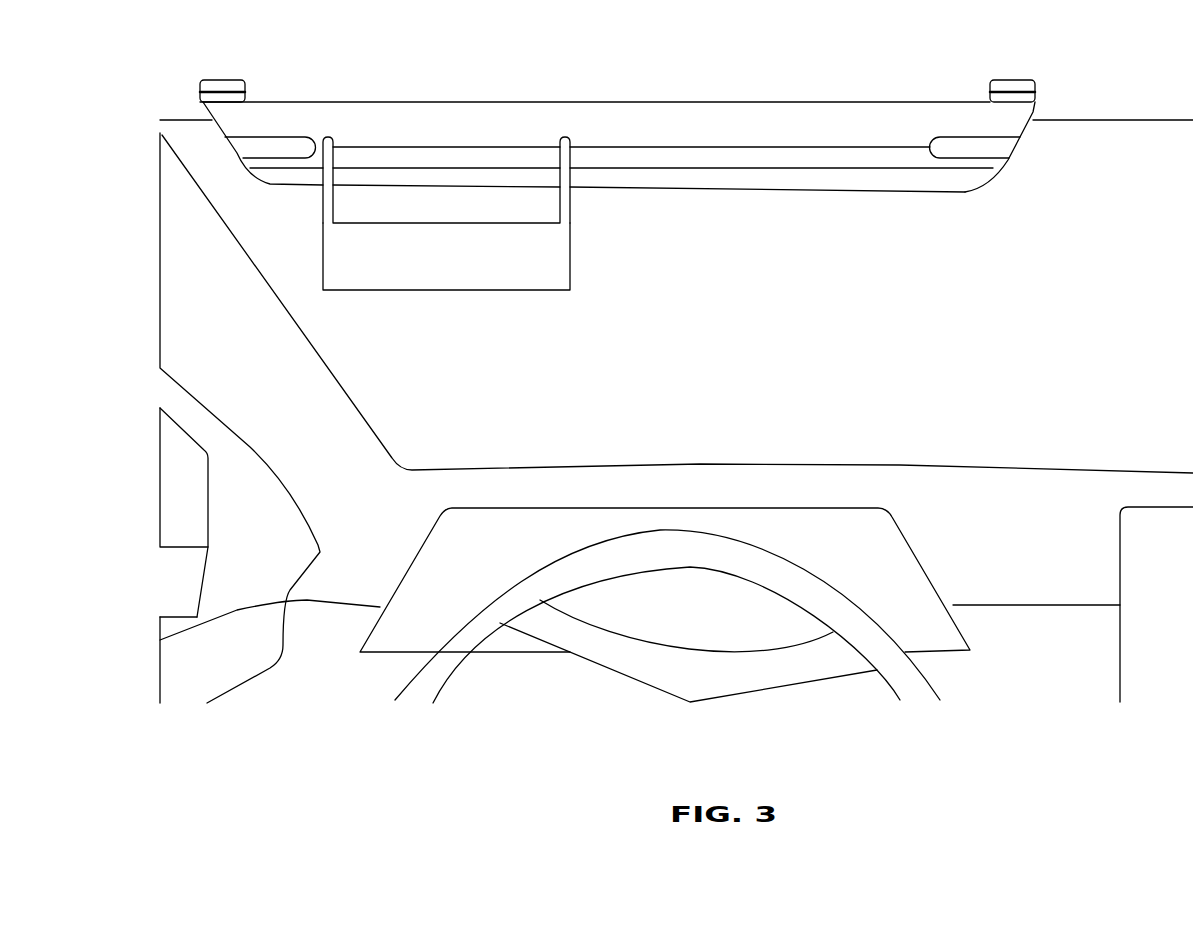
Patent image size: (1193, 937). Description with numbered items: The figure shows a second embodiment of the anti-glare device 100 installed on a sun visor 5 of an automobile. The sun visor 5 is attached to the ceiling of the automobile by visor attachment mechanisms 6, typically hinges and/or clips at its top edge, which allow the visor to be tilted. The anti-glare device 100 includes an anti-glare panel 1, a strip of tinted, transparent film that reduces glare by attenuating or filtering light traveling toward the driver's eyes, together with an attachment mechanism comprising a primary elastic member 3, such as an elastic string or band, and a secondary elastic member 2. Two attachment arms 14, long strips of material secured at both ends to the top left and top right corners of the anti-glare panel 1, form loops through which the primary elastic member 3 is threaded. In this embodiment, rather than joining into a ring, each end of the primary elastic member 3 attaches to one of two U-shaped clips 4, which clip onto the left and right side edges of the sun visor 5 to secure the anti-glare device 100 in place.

The anti-glare device 100 is at (584, 312).
The anti-glare panel 1 is at (390, 275).
The secondary elastic member 2 is at (712, 172).
The primary elastic member 3 is at (798, 145).
The U-shaped clips 4 is at (293, 136).
The sun visor 5 is at (412, 110).
The visor attachment mechanisms 6 is at (218, 83).
The attachment arms 14 is at (338, 135).